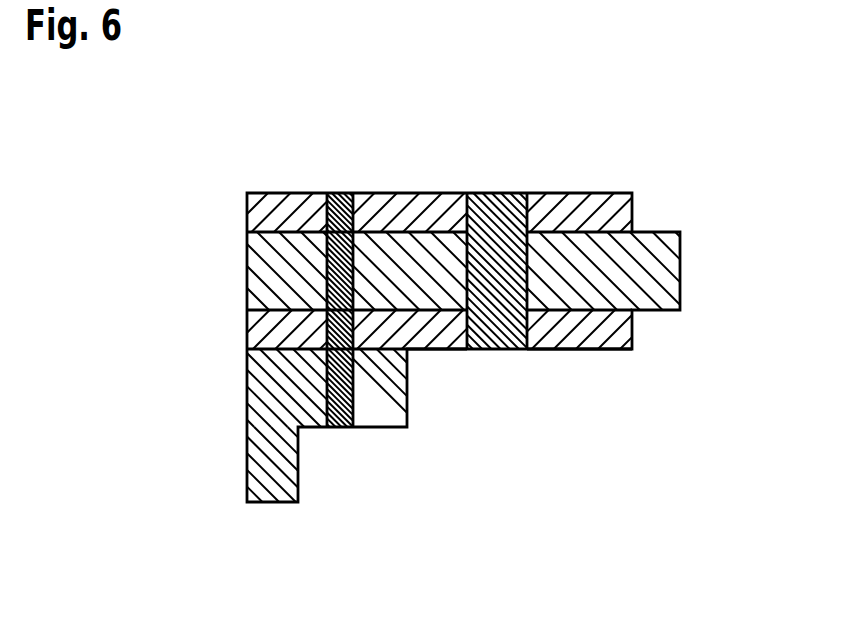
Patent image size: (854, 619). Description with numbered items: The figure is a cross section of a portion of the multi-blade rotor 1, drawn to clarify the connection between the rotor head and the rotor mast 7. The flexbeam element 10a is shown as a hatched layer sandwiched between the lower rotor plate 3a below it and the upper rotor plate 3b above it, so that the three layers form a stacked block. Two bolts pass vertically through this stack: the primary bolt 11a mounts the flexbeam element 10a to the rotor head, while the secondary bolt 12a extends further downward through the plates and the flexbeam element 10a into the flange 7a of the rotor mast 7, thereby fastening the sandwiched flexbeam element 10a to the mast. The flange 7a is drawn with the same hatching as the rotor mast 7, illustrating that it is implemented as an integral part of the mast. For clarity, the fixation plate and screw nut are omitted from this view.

The multi-blade rotor 1 is at (670, 159).
The lower rotor plate 3a is at (444, 333).
The upper rotor plate 3b is at (420, 192).
The rotor mast 7 is at (265, 452).
The flange 7a is at (272, 392).
The flexbeam element 10a is at (579, 292).
The primary bolt 11a is at (505, 225).
The secondary bolt 12a is at (341, 215).